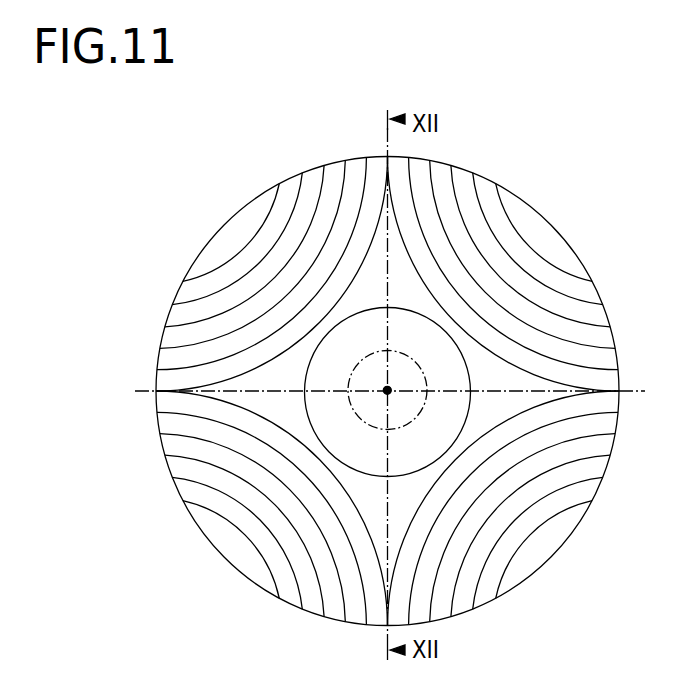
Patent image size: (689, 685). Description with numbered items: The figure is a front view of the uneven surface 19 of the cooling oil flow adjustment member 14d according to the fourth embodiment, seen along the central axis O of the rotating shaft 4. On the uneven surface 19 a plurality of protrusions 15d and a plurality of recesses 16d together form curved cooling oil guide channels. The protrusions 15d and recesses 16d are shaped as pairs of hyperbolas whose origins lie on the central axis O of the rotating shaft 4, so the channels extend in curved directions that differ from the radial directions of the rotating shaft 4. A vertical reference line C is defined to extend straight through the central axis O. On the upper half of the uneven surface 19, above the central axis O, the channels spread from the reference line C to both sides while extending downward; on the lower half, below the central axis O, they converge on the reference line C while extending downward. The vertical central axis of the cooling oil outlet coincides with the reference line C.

The uneven surface 19 is at (200, 95).
The recesses 16d is at (358, 166).
The protrusions 15d is at (294, 271).
The cooling oil flow adjustment member 14d is at (535, 200).
The reference line C is at (388, 147).
The rotating shaft 4 is at (358, 419).
The central axis O is at (396, 379).